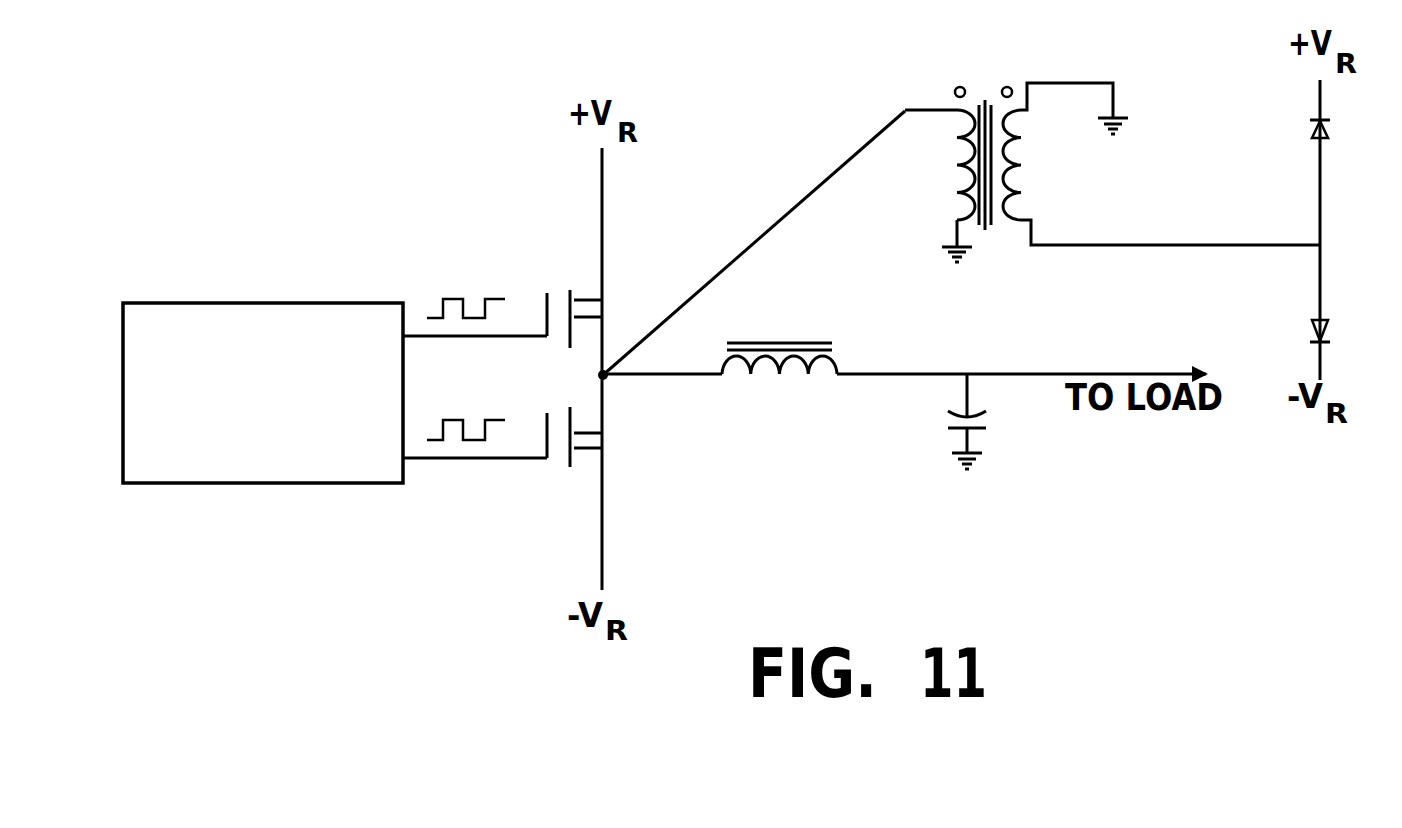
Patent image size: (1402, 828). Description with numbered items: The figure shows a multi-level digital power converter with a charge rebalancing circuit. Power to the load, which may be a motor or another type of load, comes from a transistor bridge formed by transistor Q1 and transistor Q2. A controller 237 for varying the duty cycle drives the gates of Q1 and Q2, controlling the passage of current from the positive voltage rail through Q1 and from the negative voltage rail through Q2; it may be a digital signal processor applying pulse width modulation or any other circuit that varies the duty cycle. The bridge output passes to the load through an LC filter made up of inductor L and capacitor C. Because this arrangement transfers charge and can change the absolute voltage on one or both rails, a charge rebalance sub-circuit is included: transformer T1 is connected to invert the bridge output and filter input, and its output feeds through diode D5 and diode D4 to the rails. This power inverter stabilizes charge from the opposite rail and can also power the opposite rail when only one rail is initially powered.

The controller 237 is at (263, 393).
The transistor Q1 is at (560, 300).
The transistor Q2 is at (563, 456).
The inductor L is at (779, 338).
The capacitor C is at (983, 421).
The transformer T1 is at (961, 229).
The diode D5 is at (1346, 127).
The diode D4 is at (1346, 322).